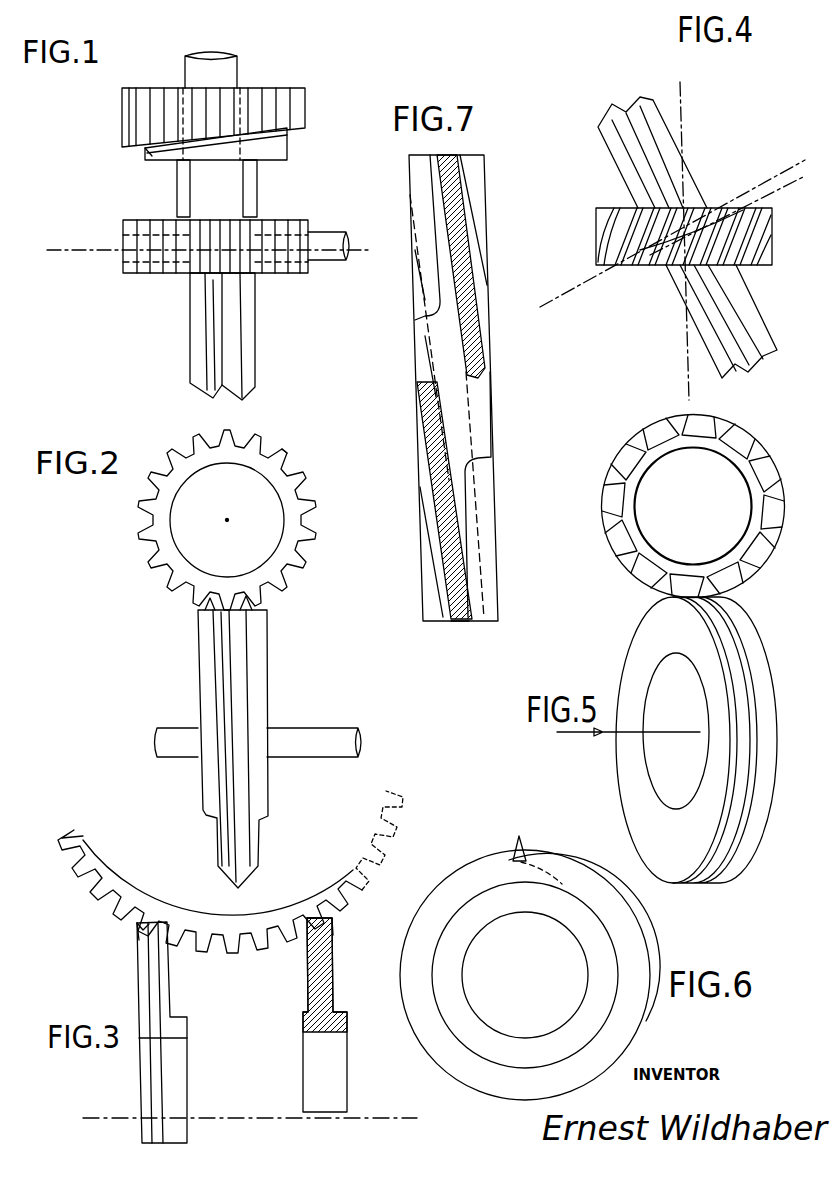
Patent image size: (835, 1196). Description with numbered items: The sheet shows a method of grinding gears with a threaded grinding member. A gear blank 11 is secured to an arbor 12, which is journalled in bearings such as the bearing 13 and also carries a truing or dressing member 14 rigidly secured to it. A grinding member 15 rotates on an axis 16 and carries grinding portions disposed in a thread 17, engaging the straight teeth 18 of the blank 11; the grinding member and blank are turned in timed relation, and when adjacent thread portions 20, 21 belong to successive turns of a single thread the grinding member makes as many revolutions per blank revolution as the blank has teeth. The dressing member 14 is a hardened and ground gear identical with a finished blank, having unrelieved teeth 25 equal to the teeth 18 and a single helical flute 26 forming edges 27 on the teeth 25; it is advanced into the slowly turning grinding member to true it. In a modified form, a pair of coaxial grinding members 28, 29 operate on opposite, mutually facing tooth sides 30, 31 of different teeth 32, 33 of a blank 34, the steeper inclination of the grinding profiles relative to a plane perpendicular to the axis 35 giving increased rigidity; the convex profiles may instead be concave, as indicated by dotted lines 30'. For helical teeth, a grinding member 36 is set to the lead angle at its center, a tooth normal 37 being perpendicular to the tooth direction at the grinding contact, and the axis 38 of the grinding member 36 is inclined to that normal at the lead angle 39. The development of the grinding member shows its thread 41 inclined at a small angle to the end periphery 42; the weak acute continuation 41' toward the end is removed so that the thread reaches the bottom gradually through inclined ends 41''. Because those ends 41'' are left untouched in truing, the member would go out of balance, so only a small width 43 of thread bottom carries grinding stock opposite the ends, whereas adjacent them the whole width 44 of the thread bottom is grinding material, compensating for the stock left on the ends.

In FIG. 1, the gear blank 11 is at (268, 222).
In FIG. 2, the gear blank 11 is at (160, 510).
In FIG. 1, the arbor 12 is at (213, 193).
In FIG. 2, the arbor 12 is at (228, 520).
In FIG. 1, the bearing 13 is at (253, 187).
In FIG. 1, the dressing member 14 is at (262, 108).
In FIG. 1, the grinding member 15 is at (240, 325).
In FIG. 2, the grinding member 15 is at (215, 700).
In FIG. 1, the axis 16 is at (327, 246).
In FIG. 2, the axis 16 is at (285, 735).
In FIG. 1, the thread 17 is at (215, 340).
In FIG. 1, the straight teeth 18 is at (160, 265).
In FIG. 2, the straight teeth 18 is at (270, 460).
In FIG. 2, the adjacent thread portion 20 is at (209, 606).
In FIG. 2, the adjacent thread portion 21 is at (250, 603).
In FIG. 1, the unrelieved teeth 25 is at (128, 104).
In FIG. 1, the helical flute 26 is at (272, 132).
In FIG. 1, the edges 27 is at (150, 152).
In FIG. 3, the grinding member 28 is at (172, 1074).
In FIG. 3, the grinding member 29 is at (340, 1073).
In FIG. 3, the tooth side 30 is at (149, 897).
In FIG. 3, the concave tooth profile 30' is at (379, 840).
In FIG. 3, the tooth side 31 is at (324, 918).
In FIG. 3, the tooth 32 is at (137, 926).
In FIG. 3, the tooth 33 is at (328, 922).
In FIG. 3, the blank 34 is at (103, 874).
In FIG. 3, the axis 35 is at (230, 1118).
In FIG. 4, the grinding member 36 is at (708, 287).
In FIG. 5, the grinding member 36 is at (735, 628).
In FIG. 4, the tooth normal 37 is at (740, 207).
In FIG. 5, the tooth normal 37 is at (693, 506).
In FIG. 4, the axis 38 is at (770, 192).
In FIG. 5, the axis 38 is at (628, 746).
In FIG. 4, the lead angle 39 is at (789, 178).
In FIG. 7, the thread 41 is at (445, 388).
In FIG. 6, the thread 41 is at (539, 975).
In FIG. 7, the continued thread end 41' is at (403, 283).
In FIG. 7, the inclined thread ends 41'' is at (458, 375).
In FIG. 6, the inclined thread ends 41'' is at (581, 918).
In FIG. 7, the end periphery 42 is at (417, 420).
In FIG. 7, the small width 43 is at (470, 619).
In FIG. 7, the whole width 44 is at (450, 352).